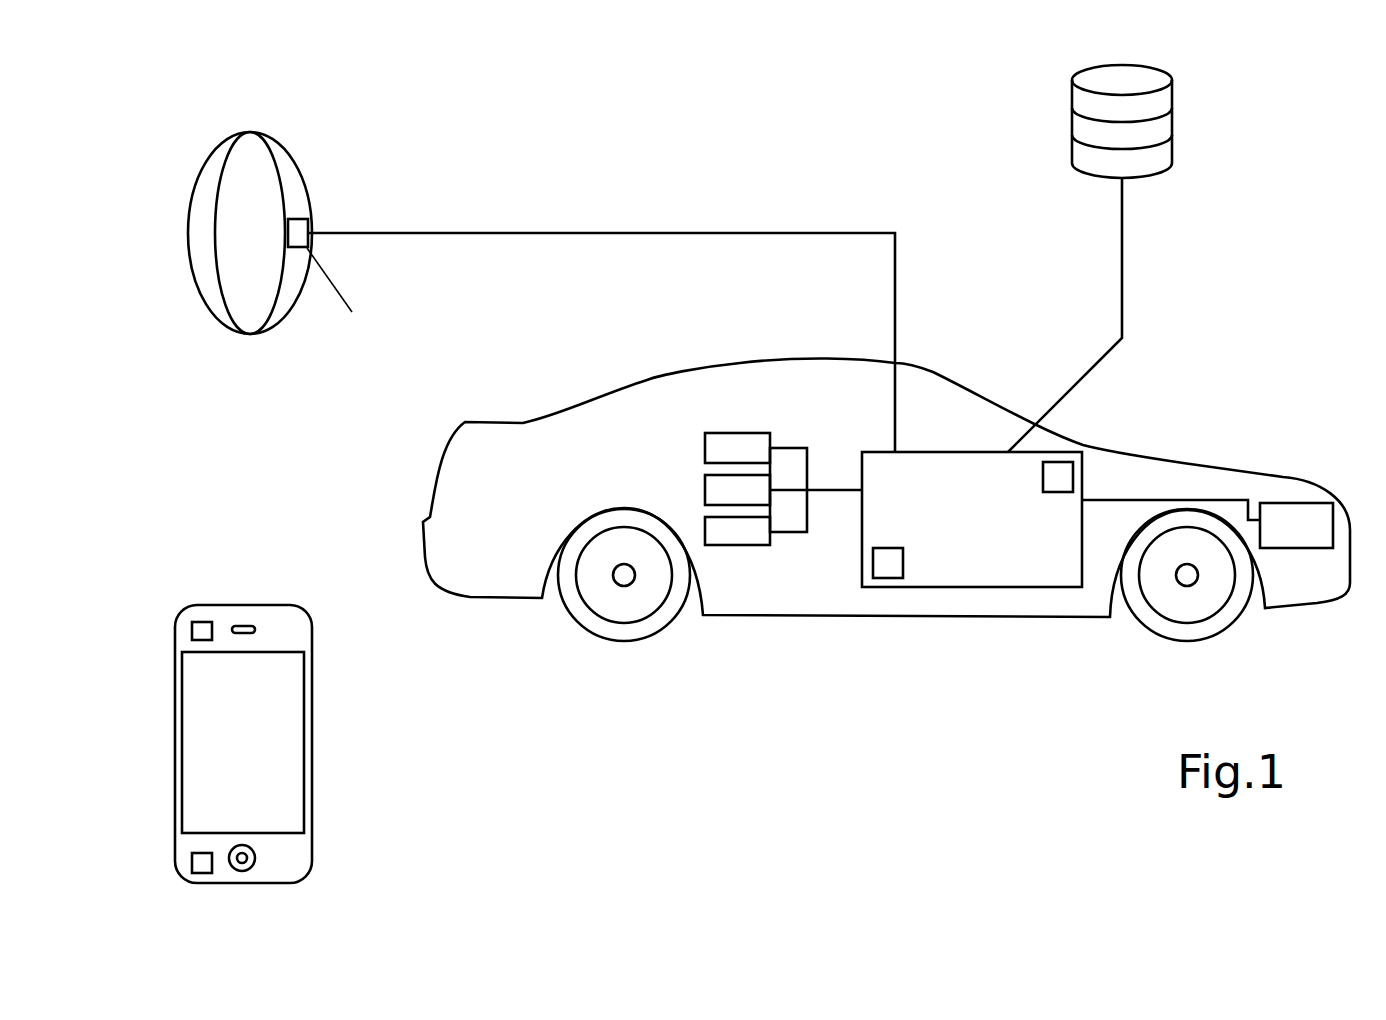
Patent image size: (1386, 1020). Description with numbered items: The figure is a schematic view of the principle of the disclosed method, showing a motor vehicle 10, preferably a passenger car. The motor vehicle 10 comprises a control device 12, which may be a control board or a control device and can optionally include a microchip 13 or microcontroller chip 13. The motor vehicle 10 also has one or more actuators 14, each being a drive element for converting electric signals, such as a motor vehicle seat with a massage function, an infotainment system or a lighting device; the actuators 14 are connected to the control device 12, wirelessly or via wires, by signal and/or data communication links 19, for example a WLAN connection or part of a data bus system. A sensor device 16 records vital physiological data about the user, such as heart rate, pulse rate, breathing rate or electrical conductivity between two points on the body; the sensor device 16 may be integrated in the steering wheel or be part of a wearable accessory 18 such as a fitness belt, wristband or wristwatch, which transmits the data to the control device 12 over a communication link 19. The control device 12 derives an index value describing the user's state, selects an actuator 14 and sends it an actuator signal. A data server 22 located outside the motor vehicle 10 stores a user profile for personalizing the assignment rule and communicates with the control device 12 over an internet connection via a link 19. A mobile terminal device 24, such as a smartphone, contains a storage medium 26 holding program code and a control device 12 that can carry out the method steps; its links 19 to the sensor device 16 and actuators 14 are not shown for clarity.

The motor vehicle 10 is at (933, 372).
The control device 12 is at (987, 452).
The microchip 13 is at (880, 578).
The actuator 14 is at (705, 440).
The sensor device 16 is at (310, 225).
The wearable accessory 18 is at (200, 232).
The signal and/or data communication link 19 is at (592, 236).
The data server 22 is at (1172, 127).
The mobile terminal device 24 is at (312, 730).
The storage medium 26 is at (1060, 475).